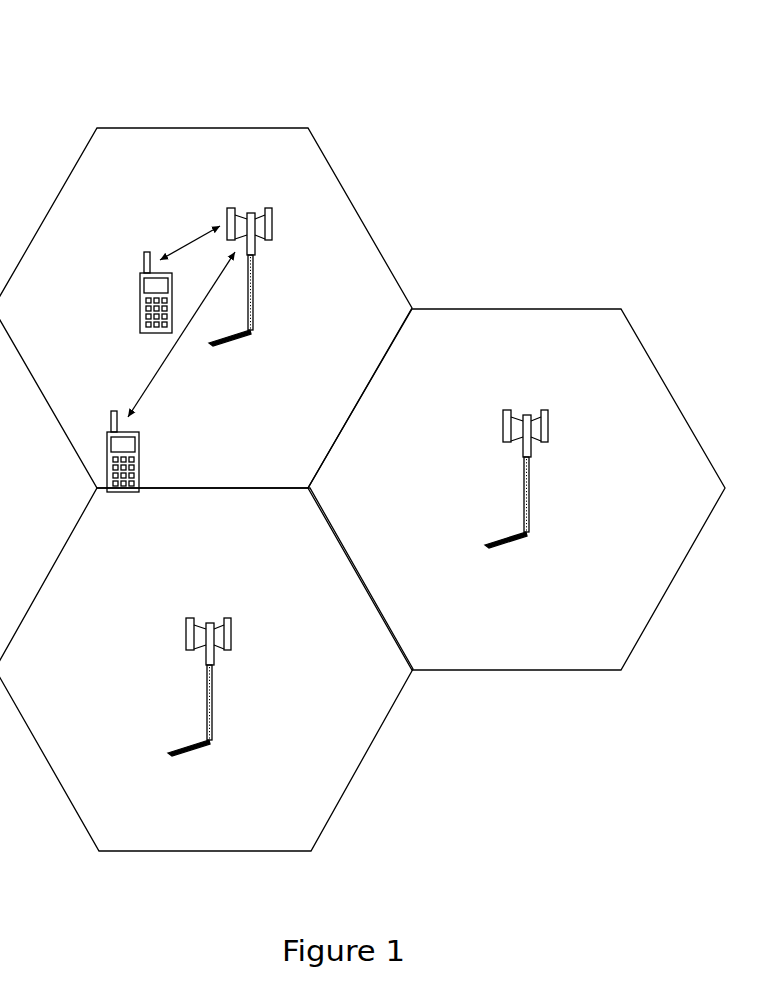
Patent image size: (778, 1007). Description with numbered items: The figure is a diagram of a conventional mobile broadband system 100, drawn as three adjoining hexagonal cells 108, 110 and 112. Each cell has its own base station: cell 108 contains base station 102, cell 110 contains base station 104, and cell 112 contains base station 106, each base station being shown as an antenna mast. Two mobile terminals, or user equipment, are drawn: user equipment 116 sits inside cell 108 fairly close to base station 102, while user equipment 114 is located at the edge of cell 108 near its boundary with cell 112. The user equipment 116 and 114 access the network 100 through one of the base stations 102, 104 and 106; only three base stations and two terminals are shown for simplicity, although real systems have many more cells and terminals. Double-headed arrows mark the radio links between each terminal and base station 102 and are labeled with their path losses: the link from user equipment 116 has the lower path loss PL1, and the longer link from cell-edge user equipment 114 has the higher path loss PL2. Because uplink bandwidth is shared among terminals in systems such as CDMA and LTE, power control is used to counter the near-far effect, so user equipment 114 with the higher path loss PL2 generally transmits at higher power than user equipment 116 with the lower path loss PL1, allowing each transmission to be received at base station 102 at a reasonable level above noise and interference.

The mobile broadband system 100 is at (107, 54).
The base station 102 is at (254, 319).
The base station 104 is at (530, 514).
The base station 106 is at (213, 710).
The cell 108 is at (142, 160).
The cell 110 is at (451, 340).
The cell 112 is at (130, 523).
The user equipment 114 is at (139, 472).
The user equipment 116 is at (140, 321).
The path loss PL1 is at (190, 240).
The path loss PL2 is at (181, 334).